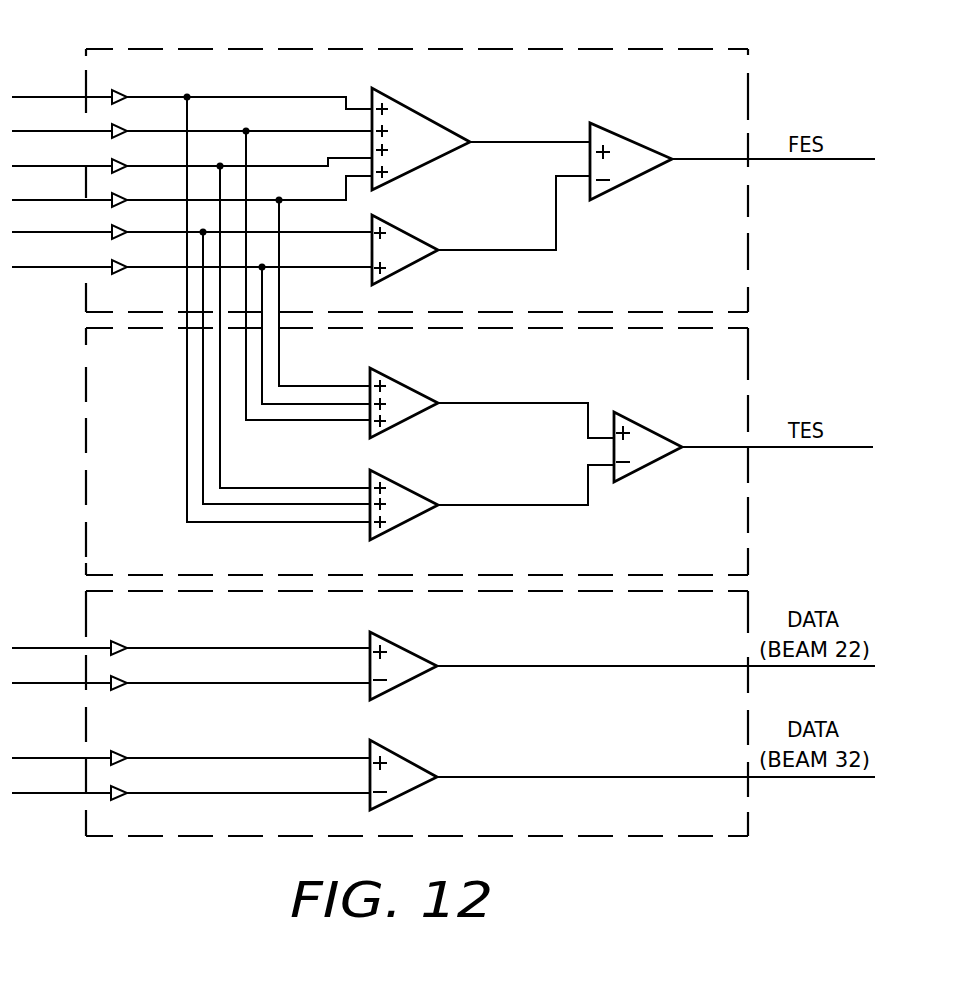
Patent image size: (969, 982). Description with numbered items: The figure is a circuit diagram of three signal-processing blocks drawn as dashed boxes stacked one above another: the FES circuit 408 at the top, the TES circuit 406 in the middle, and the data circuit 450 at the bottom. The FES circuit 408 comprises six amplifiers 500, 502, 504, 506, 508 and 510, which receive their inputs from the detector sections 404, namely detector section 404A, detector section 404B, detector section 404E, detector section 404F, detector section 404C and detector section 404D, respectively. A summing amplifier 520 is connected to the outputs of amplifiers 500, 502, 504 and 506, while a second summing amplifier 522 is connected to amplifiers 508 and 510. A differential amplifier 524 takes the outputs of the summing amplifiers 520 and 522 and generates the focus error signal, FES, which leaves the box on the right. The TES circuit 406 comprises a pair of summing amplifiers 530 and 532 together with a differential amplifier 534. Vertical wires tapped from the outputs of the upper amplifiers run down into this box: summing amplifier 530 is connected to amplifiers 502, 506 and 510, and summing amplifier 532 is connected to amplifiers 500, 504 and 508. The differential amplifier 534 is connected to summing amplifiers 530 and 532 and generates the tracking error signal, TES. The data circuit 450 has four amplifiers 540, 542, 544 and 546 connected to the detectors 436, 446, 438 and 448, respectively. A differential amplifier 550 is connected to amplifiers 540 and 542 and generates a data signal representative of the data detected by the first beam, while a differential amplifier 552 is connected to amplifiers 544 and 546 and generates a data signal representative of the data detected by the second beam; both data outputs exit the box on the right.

The FES circuit 408 is at (748, 49).
The TES circuit 406 is at (748, 380).
The data circuit 450 is at (748, 605).
The detector sections 404 is at (62, 167).
The detector section A 404A is at (62, 82).
The detector section B 404B is at (62, 116).
The detector section C 404C is at (62, 218).
The detector section D 404D is at (62, 252).
The detector section E 404E is at (62, 151).
The detector section F 404F is at (62, 185).
The amplifier 500 is at (124, 92).
The amplifier 502 is at (124, 126).
The amplifier 504 is at (124, 161).
The amplifier 506 is at (124, 195).
The amplifier 508 is at (124, 227).
The amplifier 510 is at (124, 262).
The summing amplifier 520 is at (405, 105).
The summing amplifier 522 is at (408, 233).
The differential amplifier 524 is at (627, 137).
The summing amplifier 530 is at (403, 385).
The summing amplifier 532 is at (403, 495).
The differential amplifier 534 is at (647, 428).
The detector 436 is at (61, 635).
The detector 446 is at (61, 669).
The detector 438 is at (61, 745).
The detector 448 is at (61, 779).
The amplifier 540 is at (124, 643).
The amplifier 542 is at (124, 678).
The amplifier 544 is at (124, 753).
The amplifier 546 is at (124, 788).
The differential amplifier 550 is at (405, 650).
The differential amplifier 552 is at (400, 757).